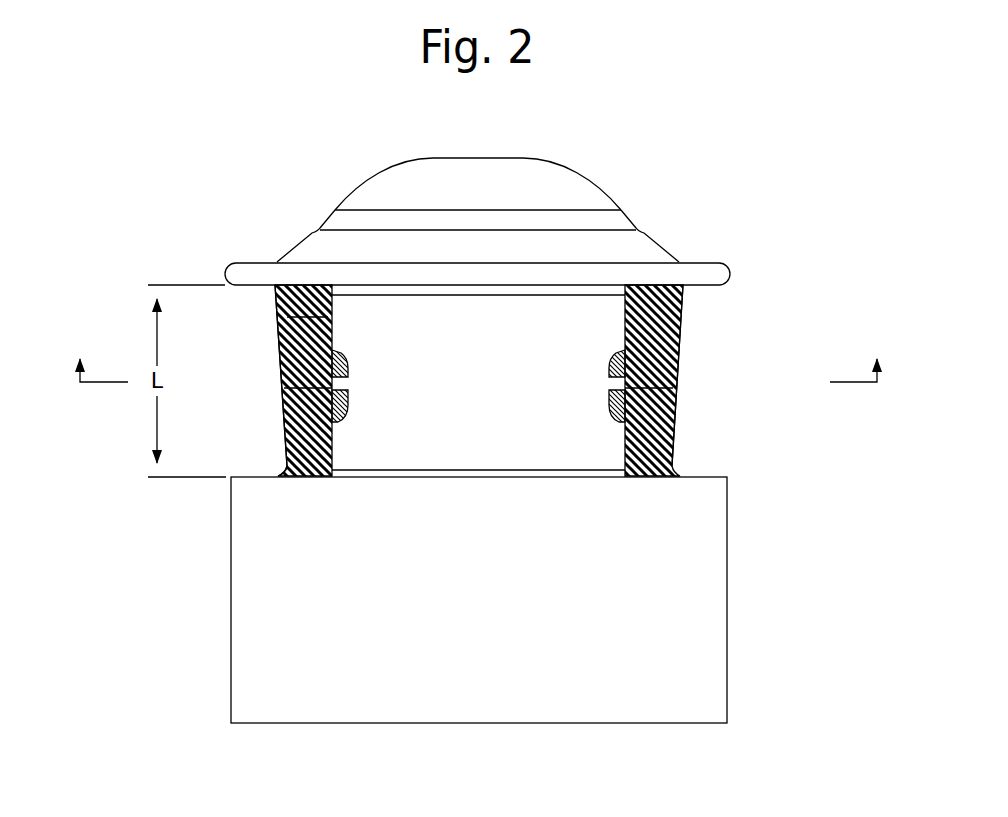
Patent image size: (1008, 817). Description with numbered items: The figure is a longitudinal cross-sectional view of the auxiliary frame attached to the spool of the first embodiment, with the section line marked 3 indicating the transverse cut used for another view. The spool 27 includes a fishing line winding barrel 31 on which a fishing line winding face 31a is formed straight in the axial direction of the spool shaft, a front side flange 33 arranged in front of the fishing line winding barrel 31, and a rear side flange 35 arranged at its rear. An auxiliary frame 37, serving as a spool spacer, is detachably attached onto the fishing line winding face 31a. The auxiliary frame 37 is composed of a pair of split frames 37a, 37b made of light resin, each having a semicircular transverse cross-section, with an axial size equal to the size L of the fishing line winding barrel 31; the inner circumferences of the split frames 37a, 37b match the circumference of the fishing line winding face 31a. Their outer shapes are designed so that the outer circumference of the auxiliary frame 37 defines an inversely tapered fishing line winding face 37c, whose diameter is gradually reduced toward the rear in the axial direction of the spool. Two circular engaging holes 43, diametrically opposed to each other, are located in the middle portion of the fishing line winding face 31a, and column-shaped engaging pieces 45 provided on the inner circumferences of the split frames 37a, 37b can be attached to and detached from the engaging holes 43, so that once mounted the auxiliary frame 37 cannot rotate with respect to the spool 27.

The spool 27 is at (719, 255).
The fishing line winding barrel 31 is at (558, 478).
The fishing line winding face 31a is at (287, 317).
The front side flange 33 is at (655, 273).
The rear side flange 35 is at (485, 712).
The auxiliary frame 37 is at (689, 321).
The split frame 37a is at (292, 452).
The split frame 37b is at (678, 358).
The inversely tapered fishing line winding face 37c is at (280, 355).
The engaging hole 43 is at (288, 388).
The engaging piece 45 is at (337, 378).
The section line 3- 3 is at (477, 366).